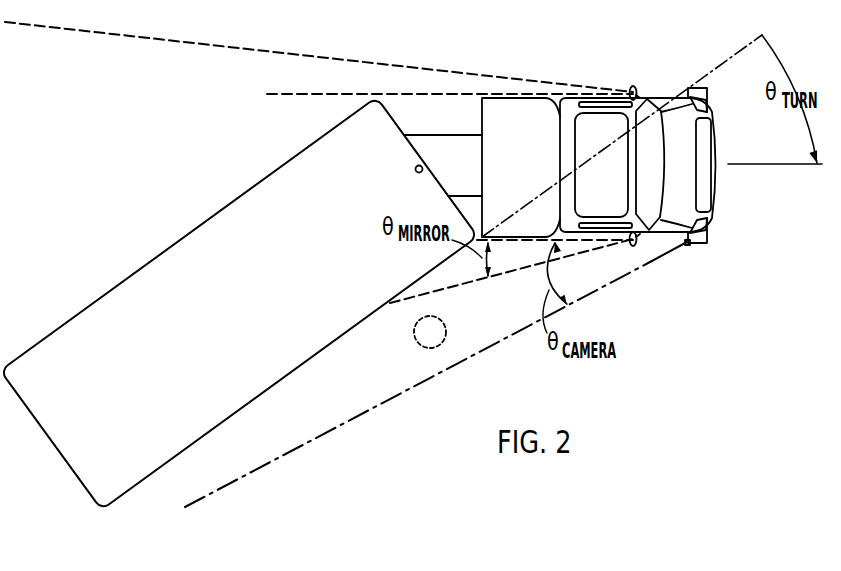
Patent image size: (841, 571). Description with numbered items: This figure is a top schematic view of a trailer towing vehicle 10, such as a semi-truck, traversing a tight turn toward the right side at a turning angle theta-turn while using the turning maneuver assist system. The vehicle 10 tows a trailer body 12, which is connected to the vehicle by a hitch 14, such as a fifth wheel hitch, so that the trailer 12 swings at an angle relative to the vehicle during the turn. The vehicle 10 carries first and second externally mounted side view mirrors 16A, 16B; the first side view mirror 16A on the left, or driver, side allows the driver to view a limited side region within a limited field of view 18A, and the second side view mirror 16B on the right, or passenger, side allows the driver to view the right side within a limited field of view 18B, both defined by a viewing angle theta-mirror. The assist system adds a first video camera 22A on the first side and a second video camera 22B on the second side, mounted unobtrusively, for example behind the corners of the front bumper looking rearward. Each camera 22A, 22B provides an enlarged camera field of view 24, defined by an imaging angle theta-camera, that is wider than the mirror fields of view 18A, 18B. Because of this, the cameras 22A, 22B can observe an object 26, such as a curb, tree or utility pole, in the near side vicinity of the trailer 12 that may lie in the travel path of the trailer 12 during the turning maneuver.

The trailer towing vehicle 10 is at (729, 189).
The trailer body 12 is at (212, 203).
The hitch 14 is at (415, 169).
The first side view mirror 16A is at (634, 86).
The second side view mirror 16B is at (636, 247).
The field of view of first mirror 18A is at (452, 71).
The field of view of second mirror 18B is at (453, 289).
The first video camera 22A is at (688, 88).
The second video camera 22B is at (689, 246).
The camera field of view 24 is at (452, 368).
The object 26 is at (415, 325).